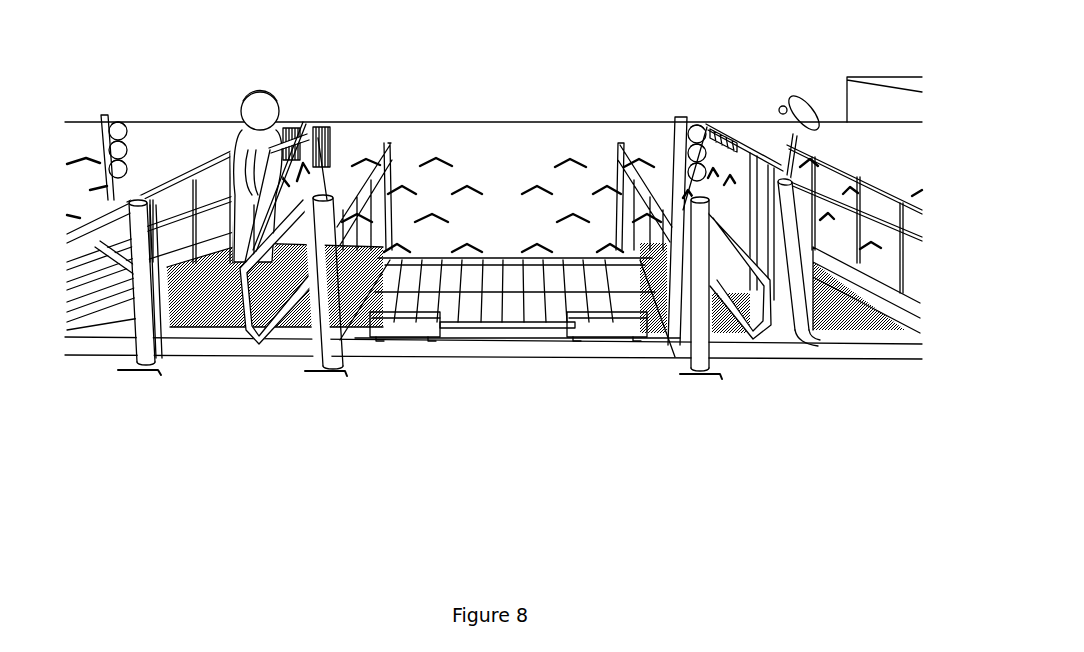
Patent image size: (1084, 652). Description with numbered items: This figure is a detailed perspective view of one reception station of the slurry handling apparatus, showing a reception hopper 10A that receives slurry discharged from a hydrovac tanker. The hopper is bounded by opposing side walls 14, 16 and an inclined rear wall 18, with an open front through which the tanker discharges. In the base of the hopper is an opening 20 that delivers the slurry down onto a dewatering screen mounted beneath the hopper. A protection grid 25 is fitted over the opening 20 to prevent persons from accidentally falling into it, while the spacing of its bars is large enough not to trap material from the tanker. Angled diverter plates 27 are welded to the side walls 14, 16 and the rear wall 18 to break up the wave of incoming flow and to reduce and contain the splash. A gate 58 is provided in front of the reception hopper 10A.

The reception hopper 10A is at (457, 415).
The side wall 14 is at (290, 163).
The side wall 16 is at (720, 165).
The inclined rear wall 18 is at (522, 138).
The opening 20 is at (522, 307).
The protection grid 25 is at (435, 312).
The angled diverter plates 27 is at (440, 160).
The gate 58 is at (761, 336).